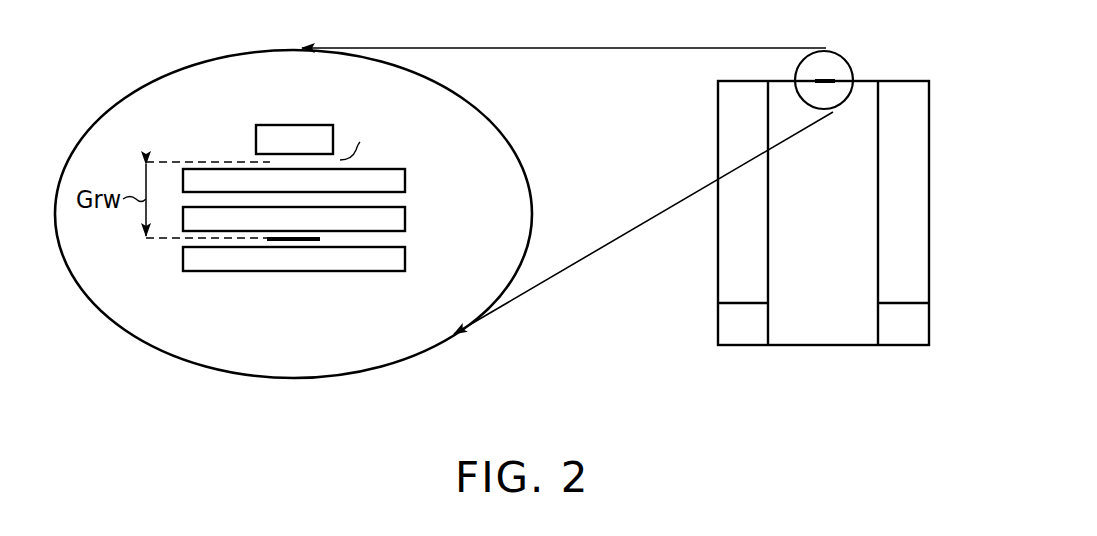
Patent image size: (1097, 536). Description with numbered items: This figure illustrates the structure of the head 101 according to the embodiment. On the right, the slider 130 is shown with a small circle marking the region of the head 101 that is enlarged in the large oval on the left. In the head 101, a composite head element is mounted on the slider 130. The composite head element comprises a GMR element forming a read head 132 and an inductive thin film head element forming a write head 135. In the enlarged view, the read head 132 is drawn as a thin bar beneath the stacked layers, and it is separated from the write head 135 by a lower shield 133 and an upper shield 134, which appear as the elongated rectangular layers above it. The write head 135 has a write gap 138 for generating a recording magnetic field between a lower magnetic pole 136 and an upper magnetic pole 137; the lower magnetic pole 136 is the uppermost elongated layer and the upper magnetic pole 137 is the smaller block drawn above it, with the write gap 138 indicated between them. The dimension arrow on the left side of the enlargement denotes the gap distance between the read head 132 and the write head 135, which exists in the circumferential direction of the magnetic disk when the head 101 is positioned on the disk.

The head 101 is at (826, 73).
The slider 130 is at (718, 279).
The read head 132 is at (291, 242).
The lower shield 133 is at (405, 261).
The upper shield 134 is at (405, 220).
The write head 135 is at (369, 143).
The lower magnetic pole 136 is at (405, 183).
The upper magnetic pole 137 is at (312, 125).
The write gap 138 is at (270, 160).